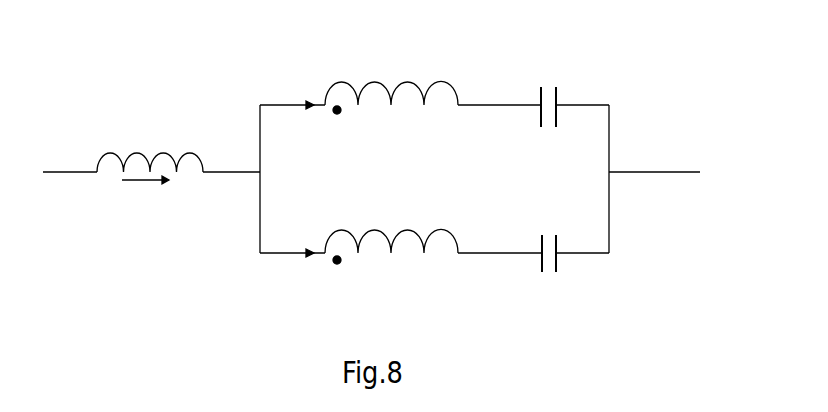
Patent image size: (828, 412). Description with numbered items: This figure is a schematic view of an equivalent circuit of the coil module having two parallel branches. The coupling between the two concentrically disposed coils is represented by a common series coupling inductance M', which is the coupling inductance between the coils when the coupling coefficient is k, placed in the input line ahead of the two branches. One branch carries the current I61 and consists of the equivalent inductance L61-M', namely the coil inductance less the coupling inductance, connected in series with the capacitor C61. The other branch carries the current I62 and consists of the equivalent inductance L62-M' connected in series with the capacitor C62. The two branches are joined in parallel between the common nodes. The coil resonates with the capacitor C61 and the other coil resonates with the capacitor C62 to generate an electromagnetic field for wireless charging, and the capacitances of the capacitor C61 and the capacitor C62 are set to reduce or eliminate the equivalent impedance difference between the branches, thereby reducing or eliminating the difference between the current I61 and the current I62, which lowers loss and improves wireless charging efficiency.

The coupling inductance M' is at (150, 154).
The current passing through the branch 62 I62 is at (292, 92).
The inductance of coil L62 minus the coupling inductance L62-M' is at (391, 82).
The capacitor C61 is at (553, 94).
The current passing through the branch 61 I61 is at (290, 271).
The inductance of coil L61 minus the coupling inductance L61-M' is at (391, 262).
The capacitor C62 is at (551, 268).